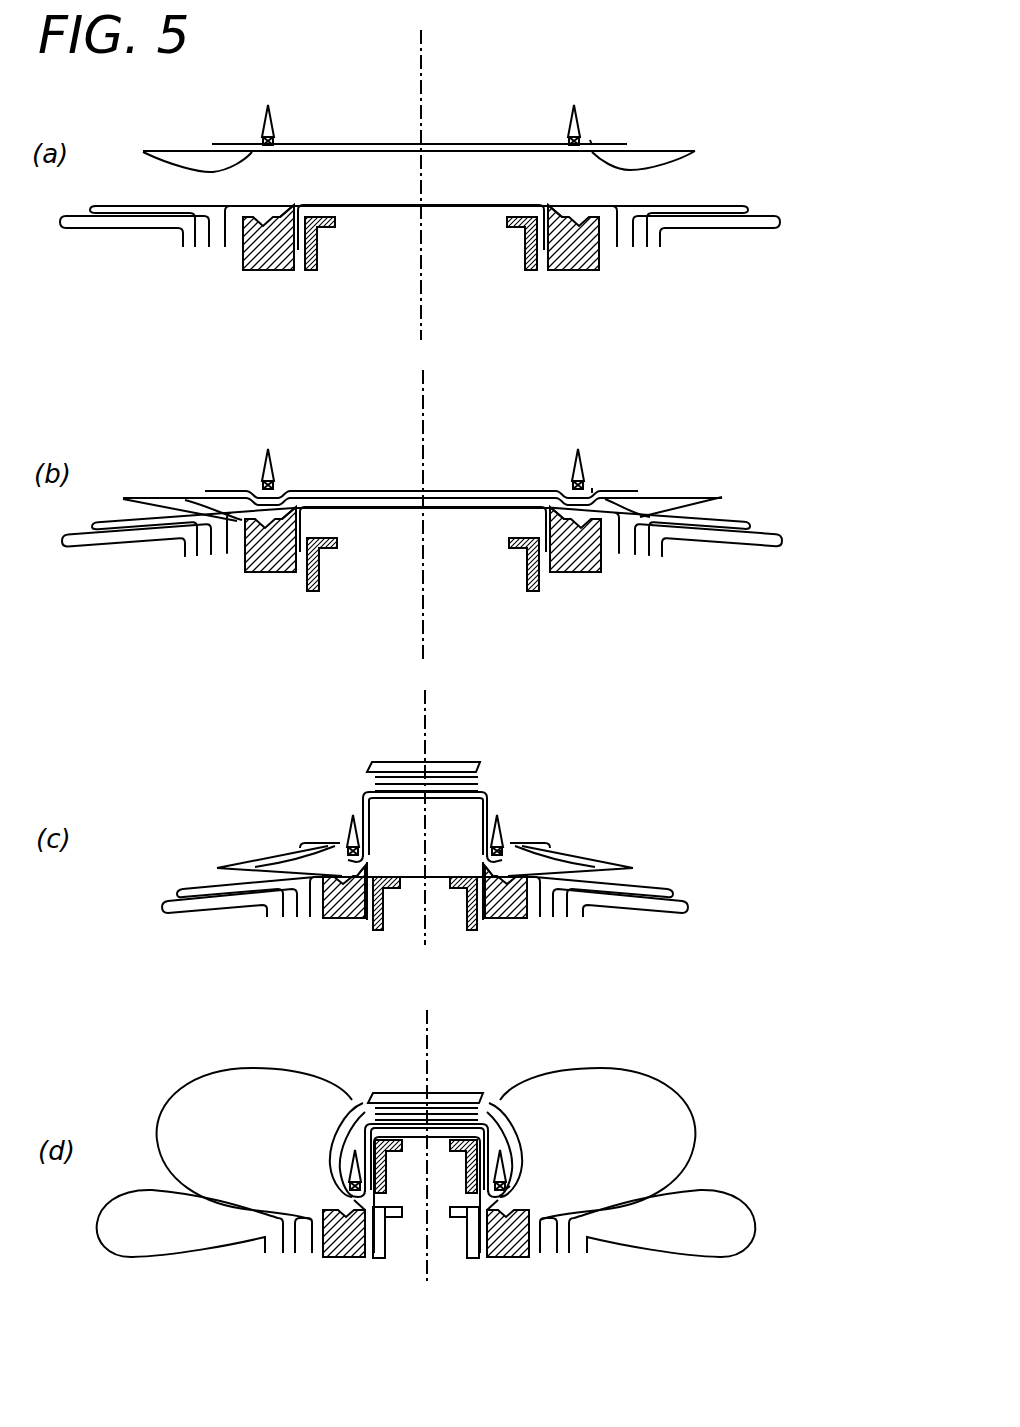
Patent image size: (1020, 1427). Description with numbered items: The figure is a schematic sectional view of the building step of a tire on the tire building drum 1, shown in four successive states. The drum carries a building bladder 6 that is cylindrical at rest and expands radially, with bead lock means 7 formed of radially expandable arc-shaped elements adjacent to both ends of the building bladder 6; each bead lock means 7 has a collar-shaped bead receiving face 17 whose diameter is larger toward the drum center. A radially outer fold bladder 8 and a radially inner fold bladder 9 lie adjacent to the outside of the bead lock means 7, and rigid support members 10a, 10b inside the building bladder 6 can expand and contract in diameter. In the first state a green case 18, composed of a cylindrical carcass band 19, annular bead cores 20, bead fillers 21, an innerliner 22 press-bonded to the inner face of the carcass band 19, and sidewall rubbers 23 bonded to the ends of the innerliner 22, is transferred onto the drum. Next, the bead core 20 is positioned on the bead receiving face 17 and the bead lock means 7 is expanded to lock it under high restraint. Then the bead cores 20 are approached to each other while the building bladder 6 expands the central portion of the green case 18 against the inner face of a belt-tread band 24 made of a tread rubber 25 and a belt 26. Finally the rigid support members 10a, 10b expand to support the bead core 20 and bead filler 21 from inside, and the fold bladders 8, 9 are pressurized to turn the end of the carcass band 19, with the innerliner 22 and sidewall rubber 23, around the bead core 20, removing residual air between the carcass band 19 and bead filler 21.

The tire building drum 1 is at (442, 282).
The building bladder 6 is at (388, 213).
The bead lock means 7 is at (575, 255).
The fold bladder 8 is at (732, 205).
The fold bladder 9 is at (770, 214).
The rigid support member 10a is at (318, 270).
The rigid support member 10b is at (426, 1232).
The bead receiving face 17 is at (552, 205).
The green case 18 is at (438, 120).
The carcass band 19 is at (470, 145).
The bead core 20 is at (590, 140).
The bead filler 21 is at (578, 105).
The innerliner 22 is at (470, 152).
The sidewall rubber 23 is at (665, 150).
The belt-tread band 24 is at (445, 750).
The tread rubber 25 is at (462, 770).
The belt 26 is at (387, 762).